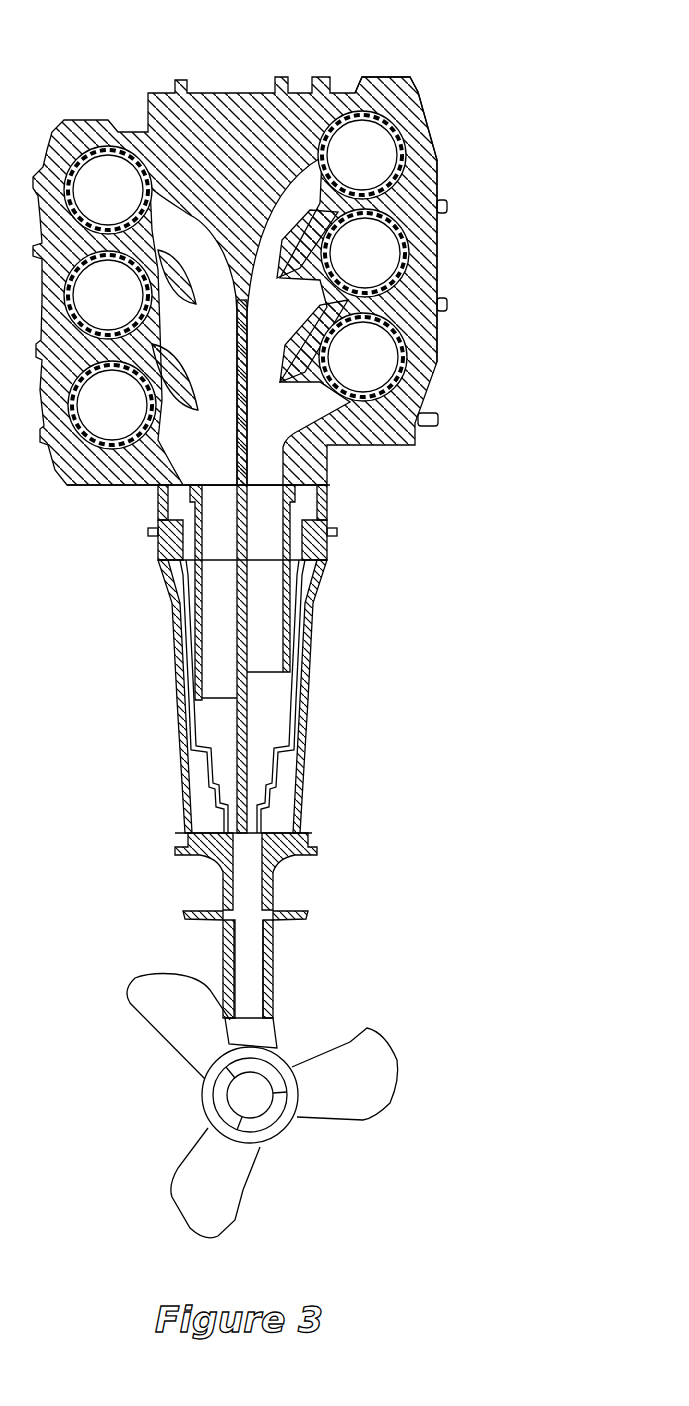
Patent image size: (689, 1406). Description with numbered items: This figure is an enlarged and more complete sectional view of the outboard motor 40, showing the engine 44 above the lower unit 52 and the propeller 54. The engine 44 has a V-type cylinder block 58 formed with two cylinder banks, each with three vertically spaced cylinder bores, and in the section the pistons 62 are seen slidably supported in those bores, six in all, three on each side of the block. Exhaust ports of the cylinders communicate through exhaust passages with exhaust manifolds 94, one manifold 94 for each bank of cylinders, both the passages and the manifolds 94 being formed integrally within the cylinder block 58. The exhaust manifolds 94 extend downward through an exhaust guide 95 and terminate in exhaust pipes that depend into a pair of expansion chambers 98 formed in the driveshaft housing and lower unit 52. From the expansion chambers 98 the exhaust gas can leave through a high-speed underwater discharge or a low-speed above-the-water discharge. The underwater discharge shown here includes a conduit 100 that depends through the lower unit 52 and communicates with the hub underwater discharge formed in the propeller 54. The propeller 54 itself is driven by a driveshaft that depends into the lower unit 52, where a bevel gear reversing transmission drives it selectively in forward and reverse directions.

The lower unit gearcase 40 is at (342, 83).
The engine 44 is at (425, 117).
The cylinder block 58 is at (430, 180).
The pistons 62 is at (236, 280).
The exhaust manifolds 94 is at (265, 470).
The exhaust guide 95 is at (330, 561).
The expansion chambers 98 is at (227, 773).
The conduit 100 is at (248, 950).
The lower unit 52 is at (275, 982).
The propeller 54 is at (357, 1040).